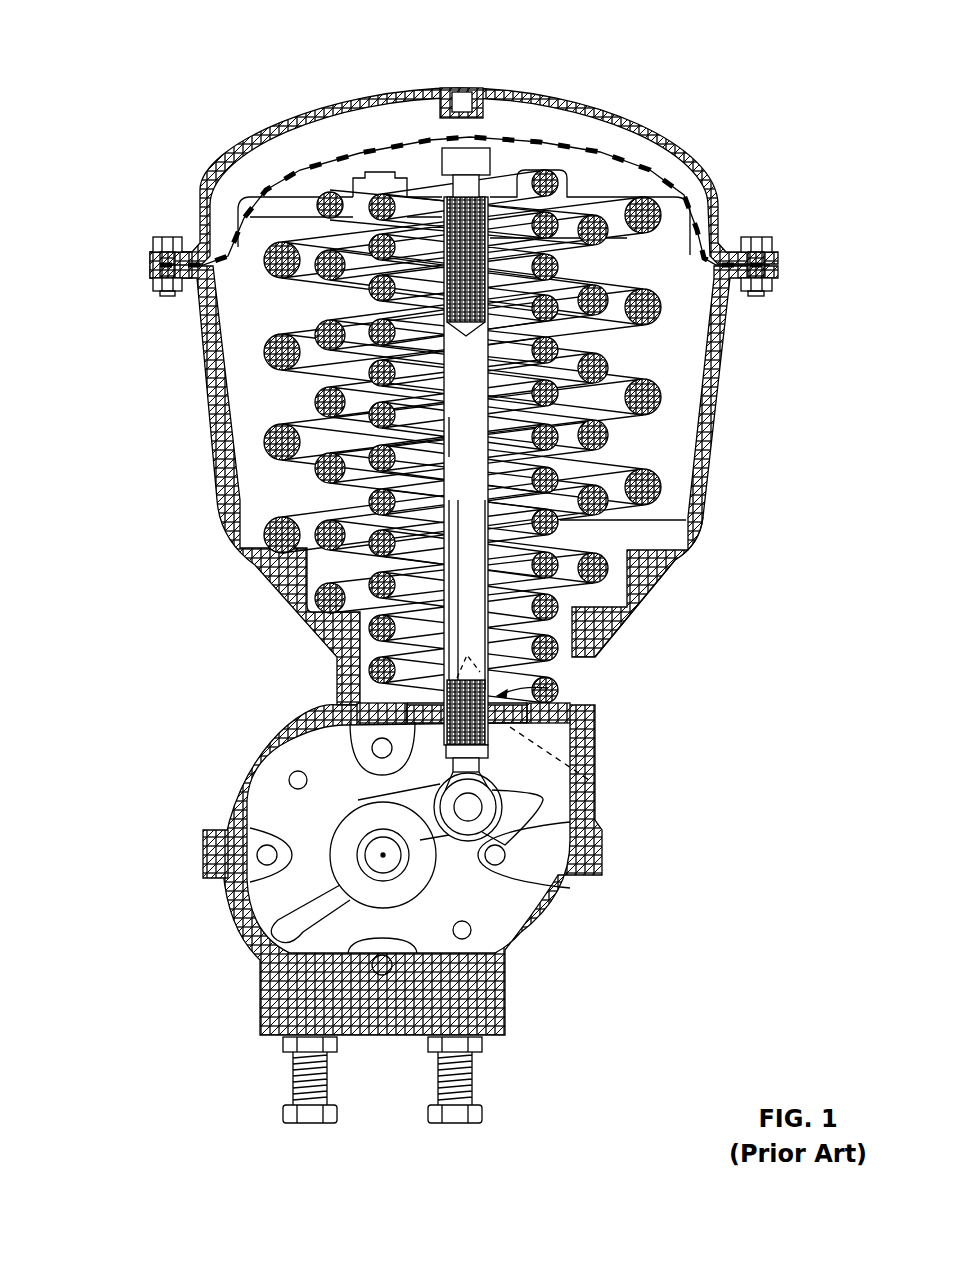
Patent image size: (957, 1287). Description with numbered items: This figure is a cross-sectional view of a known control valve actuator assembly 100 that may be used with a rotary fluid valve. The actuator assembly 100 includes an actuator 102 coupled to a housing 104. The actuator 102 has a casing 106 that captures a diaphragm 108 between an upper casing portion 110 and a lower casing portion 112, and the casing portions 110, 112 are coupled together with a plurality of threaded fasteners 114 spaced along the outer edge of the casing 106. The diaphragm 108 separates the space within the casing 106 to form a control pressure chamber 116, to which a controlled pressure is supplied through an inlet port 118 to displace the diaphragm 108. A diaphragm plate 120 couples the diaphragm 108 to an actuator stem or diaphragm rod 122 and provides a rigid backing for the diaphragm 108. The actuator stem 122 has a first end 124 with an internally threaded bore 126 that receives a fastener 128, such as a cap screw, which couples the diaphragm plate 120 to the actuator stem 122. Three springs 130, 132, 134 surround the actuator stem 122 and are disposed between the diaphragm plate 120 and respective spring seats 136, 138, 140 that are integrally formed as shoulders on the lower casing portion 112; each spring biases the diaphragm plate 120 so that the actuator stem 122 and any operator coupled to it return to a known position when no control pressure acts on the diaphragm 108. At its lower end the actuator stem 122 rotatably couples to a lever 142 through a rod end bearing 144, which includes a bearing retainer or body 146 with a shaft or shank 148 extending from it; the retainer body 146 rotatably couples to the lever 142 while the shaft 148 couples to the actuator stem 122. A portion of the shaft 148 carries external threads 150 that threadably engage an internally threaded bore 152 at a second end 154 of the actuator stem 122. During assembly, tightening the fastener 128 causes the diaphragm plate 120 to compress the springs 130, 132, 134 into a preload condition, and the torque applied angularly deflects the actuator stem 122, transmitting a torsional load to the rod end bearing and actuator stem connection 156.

The actuator assembly 100 is at (148, 51).
The actuator 102 is at (737, 149).
The housing 104 is at (598, 795).
The casing 106 is at (152, 262).
The diaphragm 108 is at (402, 138).
The upper casing portion 110 is at (610, 118).
The lower casing portion 112 is at (718, 415).
The threaded fasteners 114 is at (170, 240).
The control pressure chamber 116 is at (548, 133).
The inlet port 118 is at (466, 92).
The diaphragm plate 120 is at (330, 165).
The actuator stem 122 is at (489, 479).
The first end 124 is at (345, 190).
The internally threaded bore 126 is at (484, 200).
The fastener 128 is at (418, 165).
The spring 130 is at (370, 292).
The spring 132 is at (318, 402).
The spring 134 is at (285, 278).
The spring seat 136 is at (570, 703).
The spring seat 138 is at (632, 600).
The spring seat 140 is at (690, 552).
The lever 142 is at (353, 820).
The rod end bearing 144 is at (462, 868).
The bearing retainer 146 is at (440, 780).
The shaft 148 is at (486, 762).
The external threads 150 is at (600, 780).
The internally threaded bore 152 is at (468, 685).
The second end 154 is at (390, 703).
The rod end bearing and actuator stem connection 156 is at (560, 708).